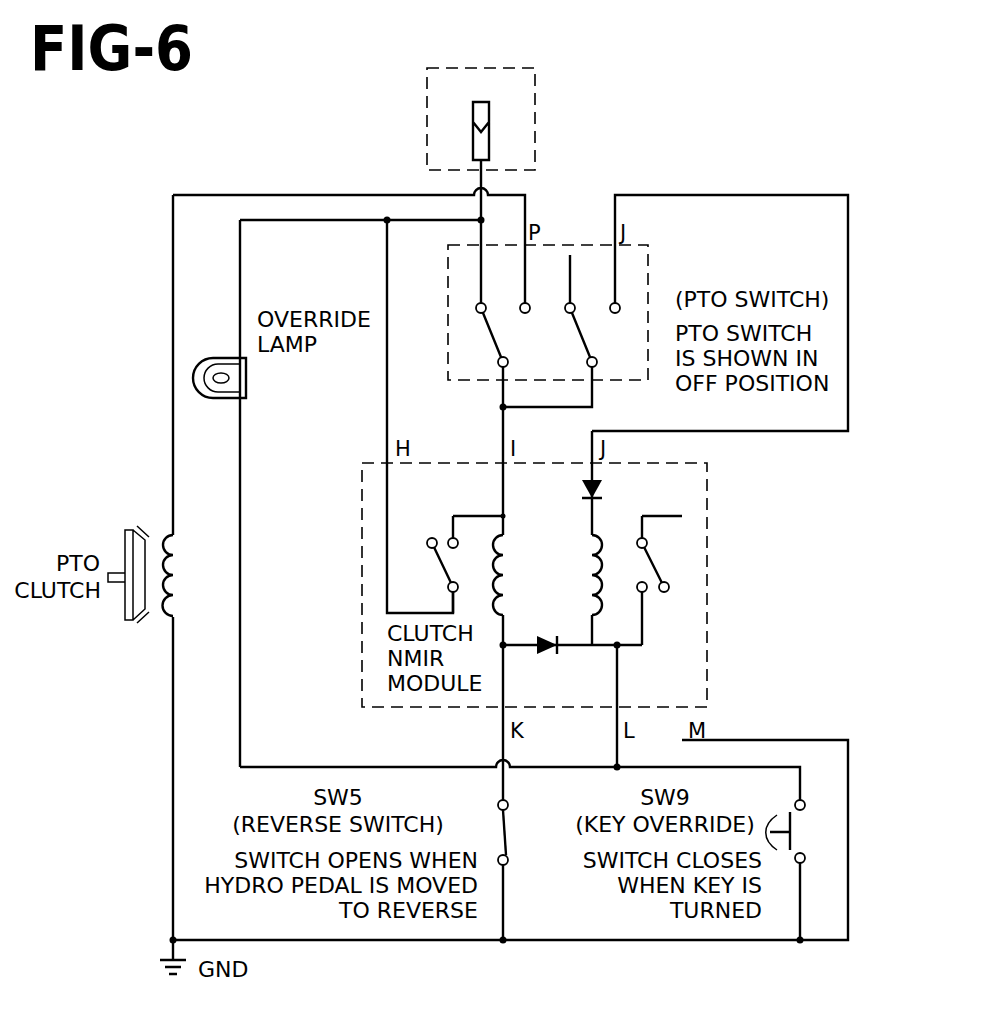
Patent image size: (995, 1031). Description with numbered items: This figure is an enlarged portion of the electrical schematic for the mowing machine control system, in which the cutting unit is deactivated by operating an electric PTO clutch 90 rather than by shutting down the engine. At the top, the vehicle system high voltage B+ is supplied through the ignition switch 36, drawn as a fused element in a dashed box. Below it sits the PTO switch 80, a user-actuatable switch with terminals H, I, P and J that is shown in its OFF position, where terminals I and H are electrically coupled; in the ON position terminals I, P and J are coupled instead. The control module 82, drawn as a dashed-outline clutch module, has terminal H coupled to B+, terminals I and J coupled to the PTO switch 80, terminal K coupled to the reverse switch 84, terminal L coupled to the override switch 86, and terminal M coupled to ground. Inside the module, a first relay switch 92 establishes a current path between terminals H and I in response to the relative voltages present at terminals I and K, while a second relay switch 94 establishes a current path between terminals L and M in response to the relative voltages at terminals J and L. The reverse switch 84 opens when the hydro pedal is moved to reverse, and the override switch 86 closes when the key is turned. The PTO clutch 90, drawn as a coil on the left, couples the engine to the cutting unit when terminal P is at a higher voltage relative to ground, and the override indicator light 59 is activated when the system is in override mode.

The ignition switch 36 is at (535, 90).
The override indicator light 59 is at (222, 357).
The PTO switch 80 is at (648, 262).
The control module 82 is at (588, 585).
The reverse switch 84 is at (507, 832).
The override switch 86 is at (803, 833).
The PTO clutch 90 is at (168, 535).
The first relay switch 92 is at (505, 578).
The second relay switch 94 is at (592, 516).